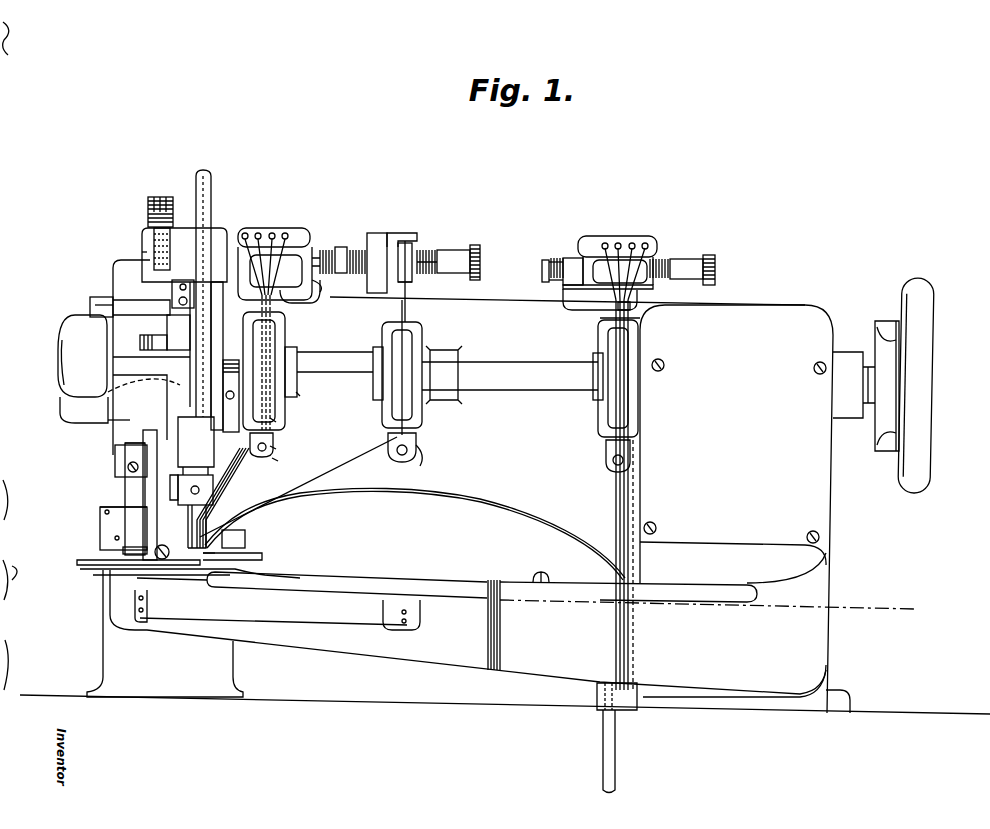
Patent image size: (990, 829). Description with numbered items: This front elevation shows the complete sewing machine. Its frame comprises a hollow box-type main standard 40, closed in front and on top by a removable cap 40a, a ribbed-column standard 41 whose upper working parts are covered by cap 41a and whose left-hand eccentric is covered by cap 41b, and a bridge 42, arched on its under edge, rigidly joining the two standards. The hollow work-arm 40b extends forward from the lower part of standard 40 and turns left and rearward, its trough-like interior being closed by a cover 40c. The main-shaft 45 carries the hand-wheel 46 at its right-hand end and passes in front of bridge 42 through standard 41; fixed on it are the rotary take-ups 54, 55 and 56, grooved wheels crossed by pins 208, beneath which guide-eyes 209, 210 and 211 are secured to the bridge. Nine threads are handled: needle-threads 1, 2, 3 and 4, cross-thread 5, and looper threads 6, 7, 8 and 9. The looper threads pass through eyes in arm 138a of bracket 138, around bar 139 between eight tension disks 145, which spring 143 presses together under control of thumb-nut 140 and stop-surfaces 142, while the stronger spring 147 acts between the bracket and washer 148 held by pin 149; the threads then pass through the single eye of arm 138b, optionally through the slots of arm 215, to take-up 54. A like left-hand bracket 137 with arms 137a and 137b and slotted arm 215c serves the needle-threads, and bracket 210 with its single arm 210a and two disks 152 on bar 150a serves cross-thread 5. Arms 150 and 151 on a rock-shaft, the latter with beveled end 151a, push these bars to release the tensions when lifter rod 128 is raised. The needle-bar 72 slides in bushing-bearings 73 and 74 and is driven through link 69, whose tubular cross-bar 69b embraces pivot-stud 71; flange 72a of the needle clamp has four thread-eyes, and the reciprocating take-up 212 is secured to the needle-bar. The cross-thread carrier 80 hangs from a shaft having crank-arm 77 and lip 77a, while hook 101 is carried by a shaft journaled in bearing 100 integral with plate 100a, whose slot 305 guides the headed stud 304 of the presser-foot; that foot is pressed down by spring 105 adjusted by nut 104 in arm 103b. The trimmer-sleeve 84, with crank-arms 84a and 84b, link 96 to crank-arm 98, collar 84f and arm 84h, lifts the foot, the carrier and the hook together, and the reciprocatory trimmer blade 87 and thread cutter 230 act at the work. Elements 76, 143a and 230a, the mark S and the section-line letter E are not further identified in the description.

The needle-thread 1 is at (247, 232).
The needle-thread 2 is at (259, 232).
The needle-thread 3 is at (272, 232).
The needle-thread 4 is at (286, 232).
The cross-thread 5 is at (417, 233).
The looper thread 6 is at (607, 242).
The looper thread 7 is at (619, 242).
The looper thread 8 is at (633, 242).
The looper thread 9 is at (646, 242).
The main standard 40 is at (830, 548).
The cap 40a is at (793, 318).
The work-arm 40b is at (408, 663).
The cover 40c is at (408, 580).
The standard 41 is at (118, 455).
The cap 41a is at (172, 290).
The cap 41b is at (77, 357).
The bridge 42 is at (460, 494).
The main-shaft 45 is at (540, 386).
The hand-wheel 46 is at (890, 348).
The take-up 54 is at (606, 440).
The take-up 55 is at (422, 418).
The take-up 56 is at (298, 396).
The link 69 is at (100, 300).
The tubular cross-bar 69b is at (95, 306).
The pivot-stud 71 is at (168, 340).
The needle-bar 72 is at (210, 176).
The flange 72a is at (214, 500).
The bushing-bearing 73 is at (222, 228).
The bushing-bearing 74 is at (126, 444).
The thread guide frame 76 is at (298, 352).
The crank-arm 77 is at (298, 372).
The lip 77a is at (180, 385).
The thread-carrier 80 is at (204, 570).
The trimmer-sleeve 84 is at (62, 410).
The crank-arm 84a is at (100, 508).
The crank-arm 84b is at (108, 366).
The collar 84f is at (140, 340).
The arm 84h is at (110, 423).
The reciprocatory blade 87 is at (264, 452).
The link 96 is at (118, 465).
The crank-arm 98 is at (128, 472).
The tubular bearing 100 is at (100, 527).
The plate 100a is at (123, 550).
The hook 101 is at (77, 563).
The arm 103b is at (182, 238).
The adjusting nut 104 is at (148, 212).
The presser-foot spring 105 is at (142, 252).
The lifter rod 128 is at (604, 757).
The bracket 137 is at (312, 255).
The arm 137a is at (300, 233).
The arm 137b is at (302, 304).
The bracket 138 is at (580, 242).
The arm 138a is at (655, 242).
The arm 138b is at (602, 322).
The bar 139 is at (548, 262).
The thumb-nut 140 is at (708, 262).
The stop-surfaces 142 is at (716, 270).
The spring 143 is at (668, 262).
The tension spring 143a is at (428, 252).
The tension disks 145 is at (653, 287).
The spring 147 is at (570, 258).
The washer 148 is at (548, 281).
The pin 149 is at (550, 270).
The arm 150 is at (403, 288).
The bar 150a is at (341, 250).
The arm 151 is at (540, 301).
The beveled end 151a is at (543, 262).
The tension disks 152 is at (410, 278).
The pins 208 is at (276, 421).
The guide-eye 209 is at (613, 470).
The bracket 210 is at (413, 452).
The arm 210a is at (398, 233).
The guide-eye 211 is at (278, 460).
The reciprocating take-up 212 is at (276, 448).
The arm 215 is at (585, 311).
The arm 215c is at (322, 287).
The thread cutter 230 is at (538, 572).
The work plate 230a is at (113, 577).
The headed stud 304 is at (160, 560).
The slot 305 is at (136, 592).
The section line letter E is at (717, 610).
The mark S is at (14, 573).